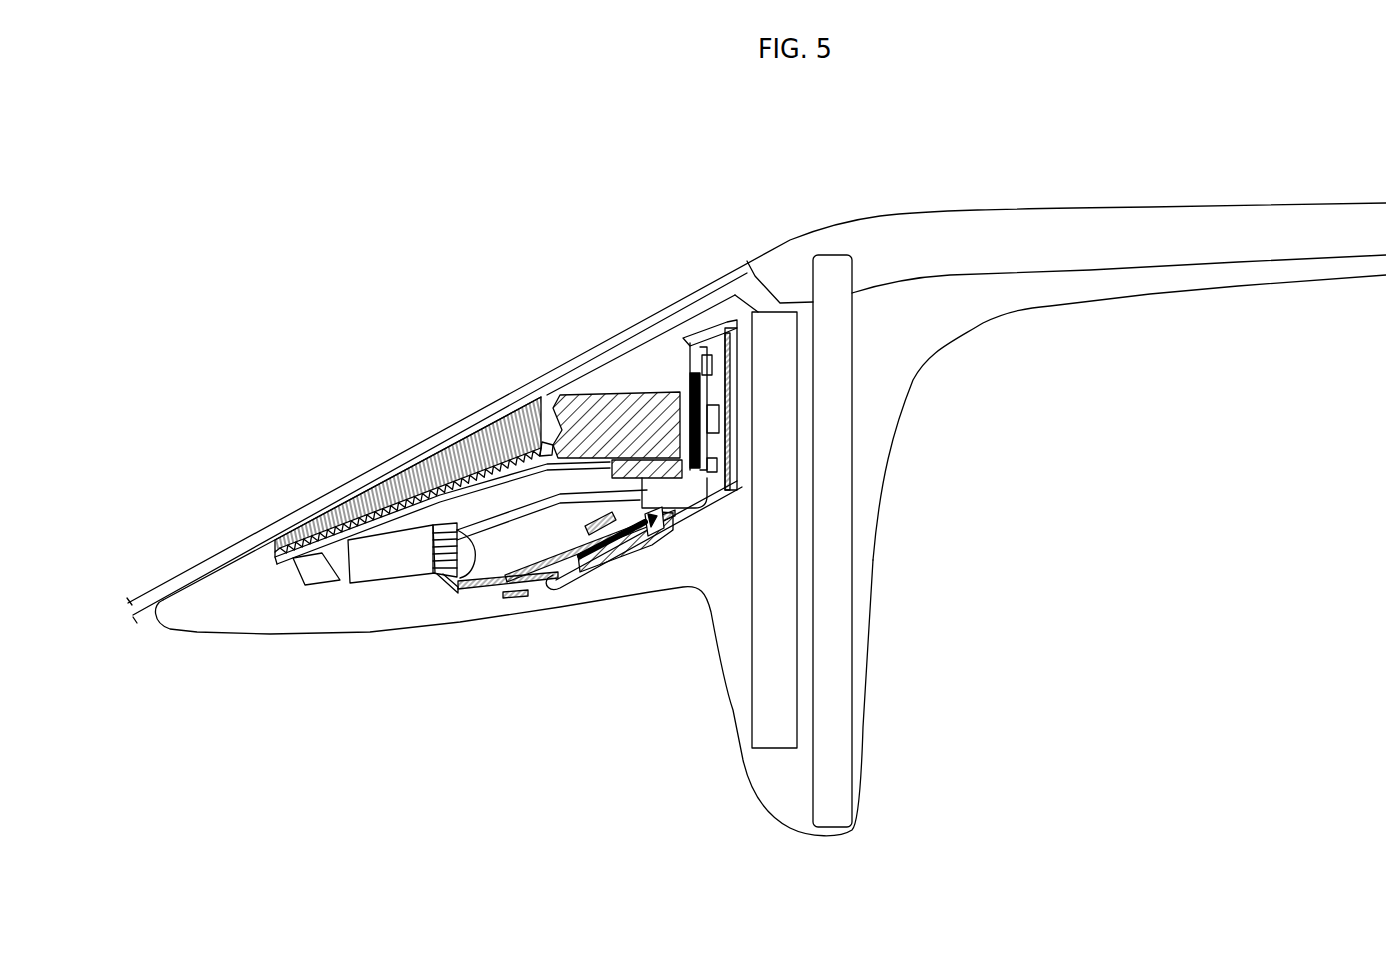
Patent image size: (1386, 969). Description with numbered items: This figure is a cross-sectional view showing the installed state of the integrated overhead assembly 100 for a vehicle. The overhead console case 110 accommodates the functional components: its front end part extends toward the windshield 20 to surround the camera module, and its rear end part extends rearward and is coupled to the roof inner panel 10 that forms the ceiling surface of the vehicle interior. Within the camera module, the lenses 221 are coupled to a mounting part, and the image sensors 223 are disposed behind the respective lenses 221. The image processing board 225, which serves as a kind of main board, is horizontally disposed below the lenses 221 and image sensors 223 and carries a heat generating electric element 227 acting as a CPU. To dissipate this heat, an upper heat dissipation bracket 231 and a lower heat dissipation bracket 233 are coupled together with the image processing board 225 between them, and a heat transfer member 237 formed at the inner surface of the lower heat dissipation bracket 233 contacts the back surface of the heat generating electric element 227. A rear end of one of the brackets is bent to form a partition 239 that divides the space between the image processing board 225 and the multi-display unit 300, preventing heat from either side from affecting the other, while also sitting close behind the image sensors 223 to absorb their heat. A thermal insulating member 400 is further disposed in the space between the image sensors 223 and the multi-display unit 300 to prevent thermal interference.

The roof inner panel 10 is at (975, 231).
The windshield 20 is at (512, 398).
The integrated overhead assembly 100 is at (974, 448).
The overhead console case 110 is at (1068, 304).
The lens 221 is at (565, 432).
The image sensor 223 is at (688, 385).
The image processing board 225 is at (567, 571).
The heat generating electric element 227 is at (617, 548).
The upper heat dissipation bracket 231 is at (458, 581).
The lower heat dissipation bracket 233 is at (545, 584).
The heat transfer member 237 is at (597, 571).
The partition 239 is at (740, 368).
The multi-display unit 300 is at (832, 289).
The thermal insulating member 400 is at (773, 723).